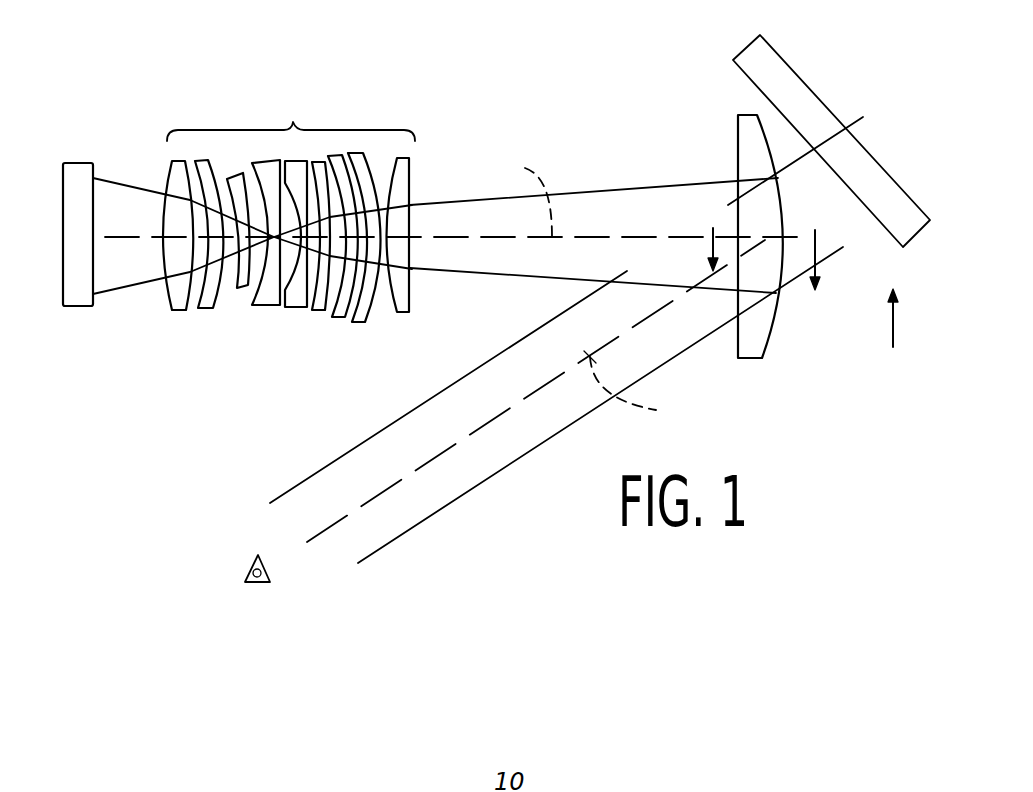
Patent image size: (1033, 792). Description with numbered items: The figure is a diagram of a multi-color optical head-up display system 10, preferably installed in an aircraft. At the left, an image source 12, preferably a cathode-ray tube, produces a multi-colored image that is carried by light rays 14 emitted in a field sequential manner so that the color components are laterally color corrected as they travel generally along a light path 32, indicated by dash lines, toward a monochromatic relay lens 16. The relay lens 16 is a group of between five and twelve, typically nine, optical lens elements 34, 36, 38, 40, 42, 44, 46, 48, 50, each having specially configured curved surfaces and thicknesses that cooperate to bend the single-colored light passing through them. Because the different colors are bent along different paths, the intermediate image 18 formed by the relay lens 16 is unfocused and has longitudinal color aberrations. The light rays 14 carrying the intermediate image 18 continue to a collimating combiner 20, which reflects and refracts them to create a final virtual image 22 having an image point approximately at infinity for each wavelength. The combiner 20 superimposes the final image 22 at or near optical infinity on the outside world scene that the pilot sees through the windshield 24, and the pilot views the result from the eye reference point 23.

The head-up display system 10 is at (420, 73).
The image source 12 is at (76, 168).
The light rays 14 is at (122, 180).
The monochromatic relay lens 16 is at (295, 122).
The intermediate image 18 is at (589, 171).
The collimating combiner 20 is at (760, 331).
The final image 22 is at (899, 335).
The eye reference point 23 is at (246, 578).
The windshield 24 is at (752, 52).
The light path 32 is at (593, 295).
The lens element 34 is at (410, 300).
The lens element 36 is at (370, 312).
The lens element 38 is at (341, 318).
The lens element 40 is at (318, 308).
The lens element 42 is at (296, 308).
The lens element 44 is at (266, 300).
The lens element 46 is at (238, 300).
The lens element 48 is at (205, 308).
The lens element 50 is at (182, 300).